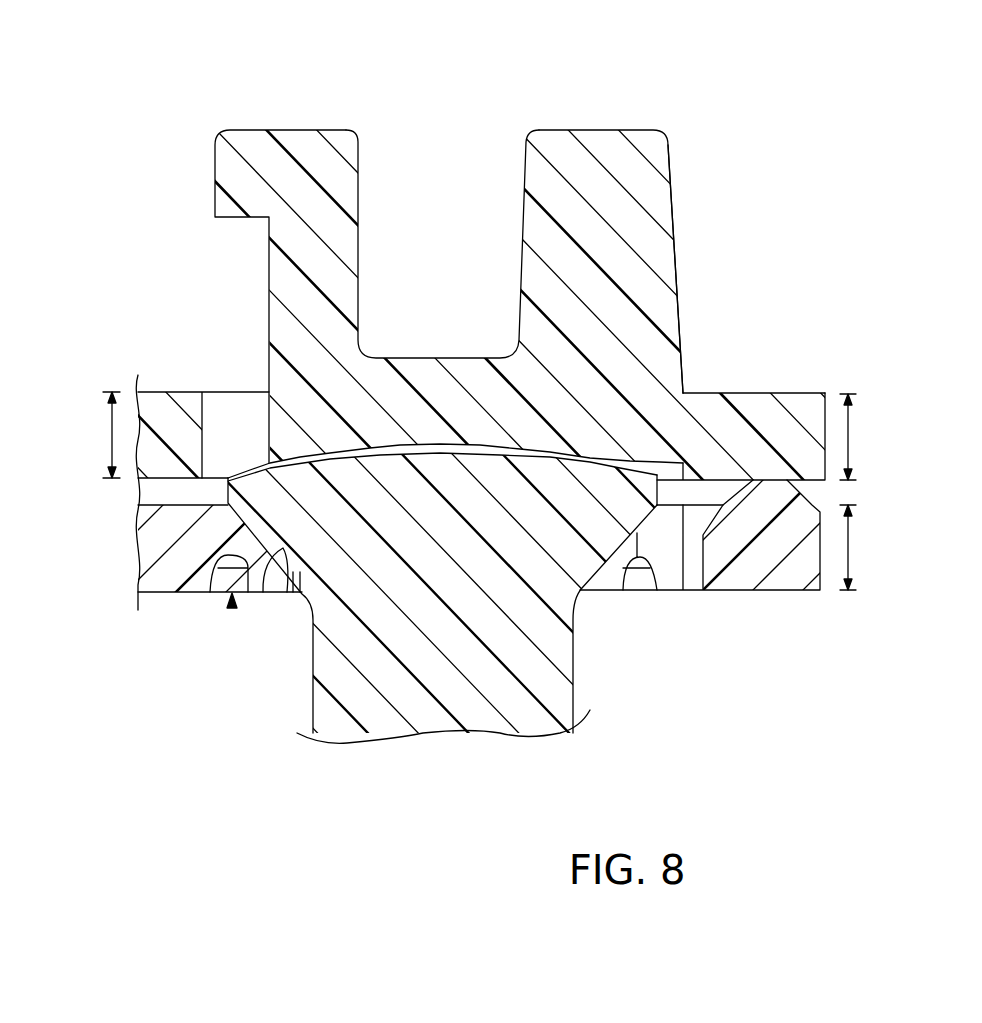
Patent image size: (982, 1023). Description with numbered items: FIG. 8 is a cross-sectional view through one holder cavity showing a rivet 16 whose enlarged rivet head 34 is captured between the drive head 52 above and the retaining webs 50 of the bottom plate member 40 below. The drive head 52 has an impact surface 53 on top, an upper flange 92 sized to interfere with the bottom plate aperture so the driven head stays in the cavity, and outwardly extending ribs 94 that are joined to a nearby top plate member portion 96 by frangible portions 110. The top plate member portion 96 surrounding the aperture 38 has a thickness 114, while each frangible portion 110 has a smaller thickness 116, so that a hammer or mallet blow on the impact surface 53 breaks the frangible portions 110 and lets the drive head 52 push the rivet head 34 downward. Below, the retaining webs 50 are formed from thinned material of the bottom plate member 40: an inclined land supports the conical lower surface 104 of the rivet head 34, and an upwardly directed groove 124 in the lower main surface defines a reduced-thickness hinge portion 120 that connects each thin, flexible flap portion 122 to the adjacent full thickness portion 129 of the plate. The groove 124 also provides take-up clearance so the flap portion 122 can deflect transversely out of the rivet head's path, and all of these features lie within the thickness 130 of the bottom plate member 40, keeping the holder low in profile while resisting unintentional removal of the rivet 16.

The rivet 16 is at (430, 723).
The rivet head 34 is at (578, 560).
The aperture 38 is at (230, 418).
The bottom plate member 40 is at (158, 576).
The retaining web 50 is at (232, 606).
The drive head 52 is at (640, 135).
The impact surface 53 is at (292, 130).
The flange 92 is at (232, 168).
The rib 94 is at (662, 205).
The top plate member portion 96 is at (771, 415).
The conical lower surface 104 is at (265, 600).
The frangible portion 110 is at (708, 404).
The thickness 114 is at (70, 428).
The thickness 116 is at (862, 425).
The hinge portion 120 is at (205, 512).
The flap portion 122 is at (288, 600).
The groove 124 is at (215, 590).
The full thickness portion 129 is at (740, 572).
The thickness 130 is at (853, 578).